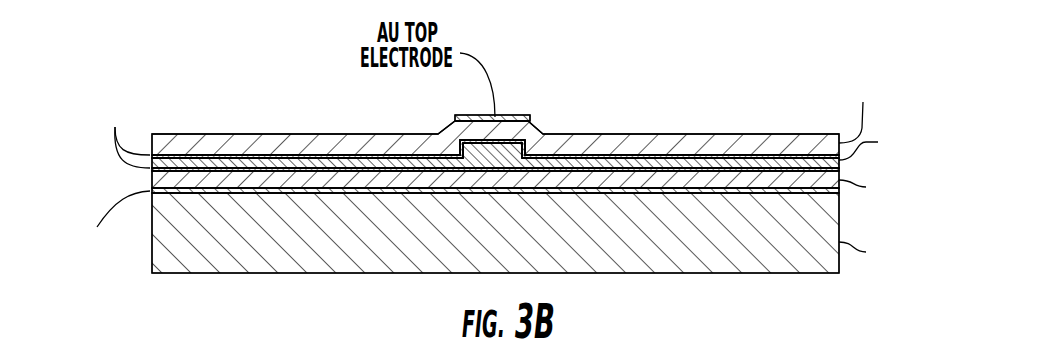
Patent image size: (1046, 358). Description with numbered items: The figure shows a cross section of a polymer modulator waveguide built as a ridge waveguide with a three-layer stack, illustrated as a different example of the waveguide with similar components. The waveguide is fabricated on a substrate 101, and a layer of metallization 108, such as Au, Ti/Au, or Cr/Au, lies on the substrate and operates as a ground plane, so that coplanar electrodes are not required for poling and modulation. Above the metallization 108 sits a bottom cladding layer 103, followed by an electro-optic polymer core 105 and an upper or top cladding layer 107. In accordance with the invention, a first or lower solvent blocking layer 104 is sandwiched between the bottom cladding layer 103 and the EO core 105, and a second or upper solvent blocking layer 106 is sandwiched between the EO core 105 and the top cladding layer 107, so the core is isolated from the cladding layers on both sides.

The substrate 101 is at (703, 262).
The bottom cladding layer 103 is at (600, 180).
The lower solvent blocking layer 104 is at (320, 168).
The electro-optic polymer core 105 is at (677, 160).
The upper solvent blocking layer 106 is at (224, 155).
The top cladding layer 107 is at (760, 138).
The metallization layer 108 is at (293, 193).